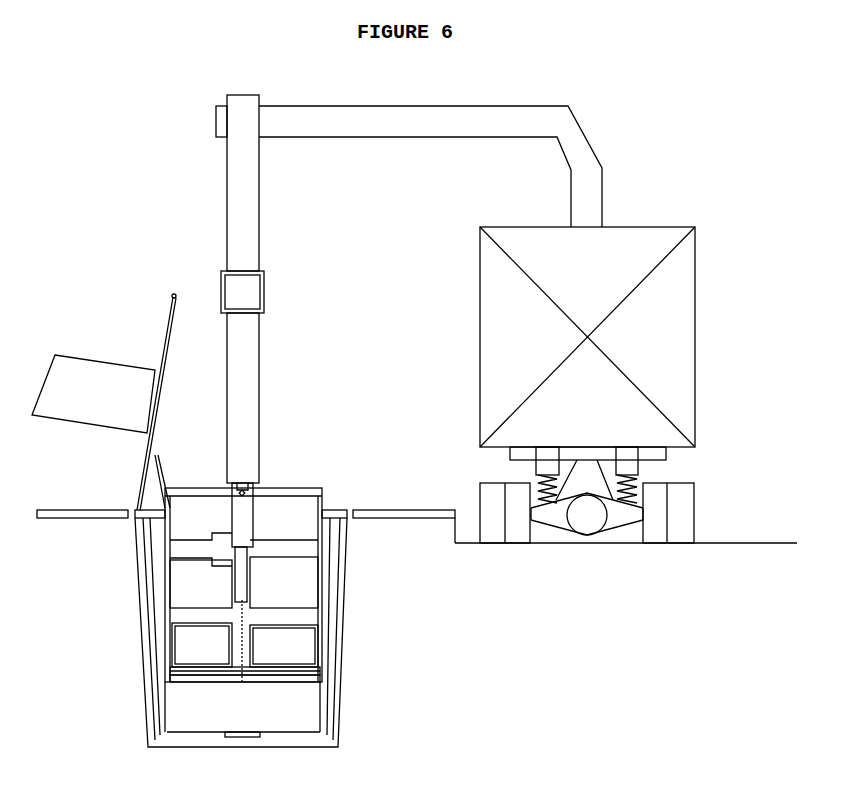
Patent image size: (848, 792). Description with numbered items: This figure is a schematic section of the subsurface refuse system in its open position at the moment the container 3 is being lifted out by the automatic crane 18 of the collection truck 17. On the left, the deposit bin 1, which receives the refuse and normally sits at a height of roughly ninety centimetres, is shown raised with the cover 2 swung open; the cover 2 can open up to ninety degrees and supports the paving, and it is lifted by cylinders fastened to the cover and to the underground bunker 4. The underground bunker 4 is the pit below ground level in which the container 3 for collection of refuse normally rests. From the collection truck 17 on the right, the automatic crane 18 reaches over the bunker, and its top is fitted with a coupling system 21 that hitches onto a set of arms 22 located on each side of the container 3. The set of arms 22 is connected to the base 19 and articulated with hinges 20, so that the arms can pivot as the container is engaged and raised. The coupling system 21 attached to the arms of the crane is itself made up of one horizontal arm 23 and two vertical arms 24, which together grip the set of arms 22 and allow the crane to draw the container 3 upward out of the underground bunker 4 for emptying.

The deposit bin 1 is at (75, 362).
The cover 2 is at (142, 468).
The container 3 is at (302, 573).
The underground bunker 4 is at (333, 736).
The collection truck 17 is at (686, 292).
The automatic crane 18 is at (598, 178).
The base 19 is at (300, 682).
The hinges 20 is at (167, 676).
The coupling system 21 is at (240, 192).
The set of arms 22 is at (245, 508).
The horizontal arm 23 is at (262, 290).
The vertical arms 24 is at (258, 370).